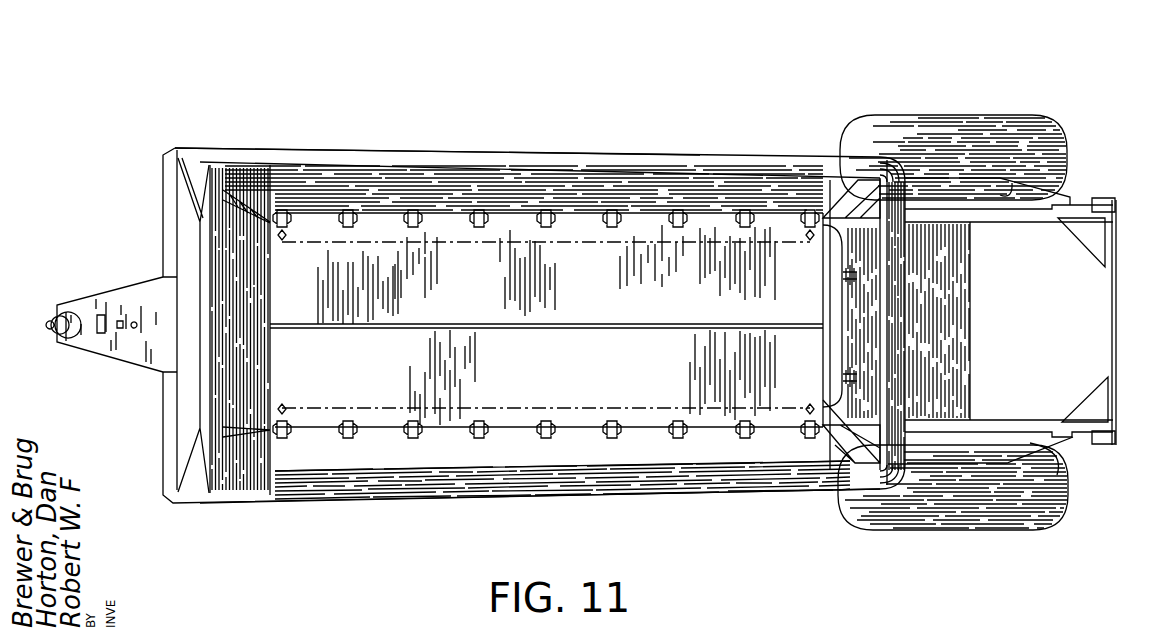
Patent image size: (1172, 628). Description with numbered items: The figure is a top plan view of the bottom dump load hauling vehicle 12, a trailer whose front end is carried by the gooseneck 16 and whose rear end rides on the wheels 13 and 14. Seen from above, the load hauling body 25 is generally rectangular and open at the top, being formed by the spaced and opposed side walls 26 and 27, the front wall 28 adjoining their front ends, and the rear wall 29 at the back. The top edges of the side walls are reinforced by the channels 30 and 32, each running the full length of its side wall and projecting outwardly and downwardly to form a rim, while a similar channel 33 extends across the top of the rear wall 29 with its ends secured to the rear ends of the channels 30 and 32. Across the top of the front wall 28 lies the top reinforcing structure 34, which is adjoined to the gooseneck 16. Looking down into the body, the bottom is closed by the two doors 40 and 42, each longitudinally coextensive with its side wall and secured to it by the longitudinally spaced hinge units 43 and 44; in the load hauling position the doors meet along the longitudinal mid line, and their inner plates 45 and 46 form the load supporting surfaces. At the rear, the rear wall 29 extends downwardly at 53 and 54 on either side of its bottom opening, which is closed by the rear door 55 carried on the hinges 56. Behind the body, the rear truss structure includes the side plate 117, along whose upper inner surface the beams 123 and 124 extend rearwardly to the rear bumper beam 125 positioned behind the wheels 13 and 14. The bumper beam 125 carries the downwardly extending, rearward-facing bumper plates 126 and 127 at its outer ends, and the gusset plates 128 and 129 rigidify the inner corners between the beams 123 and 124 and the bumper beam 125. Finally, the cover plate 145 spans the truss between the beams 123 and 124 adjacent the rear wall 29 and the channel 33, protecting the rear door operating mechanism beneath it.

The bottom dump load hauling vehicle 12 is at (530, 152).
The wheel 13 is at (985, 140).
The wheel 14 is at (990, 515).
The gooseneck 16 is at (128, 340).
The load hauling body 25 is at (268, 147).
The side wall 26 is at (455, 470).
The side wall 27 is at (430, 195).
The front wall 28 is at (262, 288).
The rear wall 29 is at (862, 350).
The channel 30 is at (640, 482).
The channel 32 is at (632, 172).
The channel 33 is at (897, 371).
The top reinforcing structure 34 is at (190, 248).
The door 40 is at (609, 368).
The door 42 is at (609, 290).
The hinge units 43 is at (410, 422).
The hinge units 44 is at (807, 233).
The inner plate 45 is at (645, 326).
The inner plate 46 is at (480, 312).
The rear wall extension 53 is at (840, 433).
The rear wall extension 54 is at (825, 215).
The rear door 55 is at (830, 295).
The hinges 56 is at (850, 387).
The side plate 117 is at (1060, 470).
The beam 123 is at (1000, 420).
The beam 124 is at (1000, 218).
The rear bumper beam 125 is at (1115, 335).
The bumper plate 126 is at (1117, 425).
The bumper plate 127 is at (1115, 212).
The gusset plate 128 is at (1100, 393).
The gusset plate 129 is at (1097, 240).
The cover plate 145 is at (960, 296).